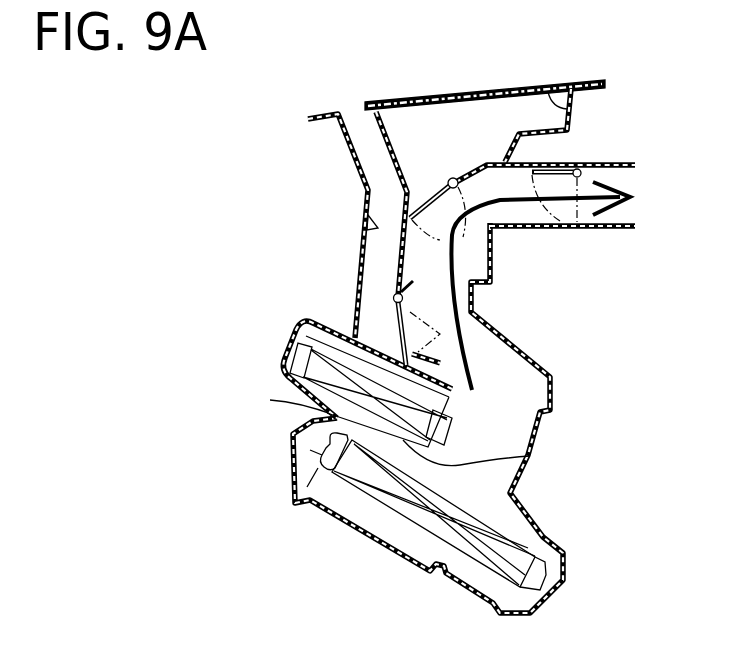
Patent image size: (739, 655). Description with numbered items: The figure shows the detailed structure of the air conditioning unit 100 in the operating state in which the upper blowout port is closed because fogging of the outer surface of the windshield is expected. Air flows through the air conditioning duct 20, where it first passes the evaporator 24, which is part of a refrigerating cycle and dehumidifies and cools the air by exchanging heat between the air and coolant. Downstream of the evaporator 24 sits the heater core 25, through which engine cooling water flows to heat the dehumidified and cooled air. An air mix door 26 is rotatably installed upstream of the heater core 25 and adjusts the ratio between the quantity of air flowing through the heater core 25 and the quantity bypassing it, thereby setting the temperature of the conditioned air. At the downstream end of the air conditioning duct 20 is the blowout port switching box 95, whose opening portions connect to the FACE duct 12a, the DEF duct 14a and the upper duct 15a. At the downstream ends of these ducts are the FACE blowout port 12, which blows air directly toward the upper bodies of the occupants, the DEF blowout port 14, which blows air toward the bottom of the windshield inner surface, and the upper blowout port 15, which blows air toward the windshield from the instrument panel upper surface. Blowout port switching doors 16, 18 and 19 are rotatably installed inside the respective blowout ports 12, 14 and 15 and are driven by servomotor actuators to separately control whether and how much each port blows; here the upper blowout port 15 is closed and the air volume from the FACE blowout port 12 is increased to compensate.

The air conditioning unit 100 is at (575, 308).
The blowout port switching box 95 is at (307, 185).
The DEF blowout port 14 is at (352, 112).
The DEF duct 14a is at (363, 227).
The upper blowout port 15 is at (453, 93).
The upper duct 15a is at (557, 82).
The FACE blowout port 12 is at (633, 207).
The FACE duct 12a is at (523, 212).
The blowout port switching door 16 is at (560, 172).
The blowout port switching door 19 is at (440, 190).
The blowout port switching door 18 is at (398, 328).
The air conditioning duct 20 is at (540, 427).
The air mix door 26 is at (530, 457).
The heater core 25 is at (310, 398).
The evaporator 24 is at (377, 533).